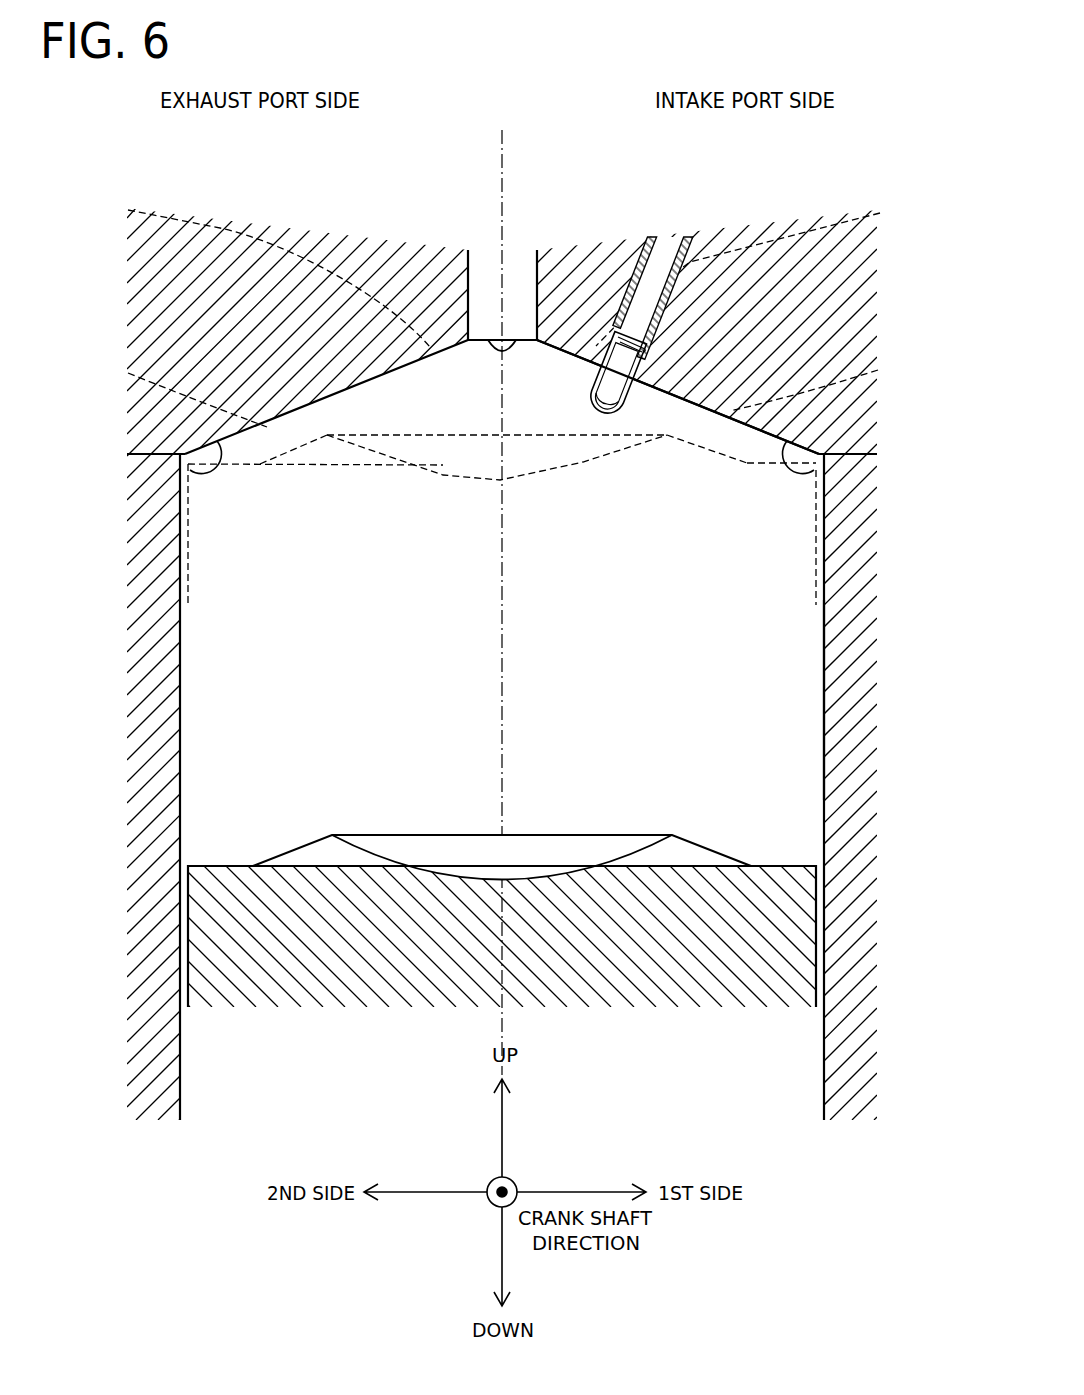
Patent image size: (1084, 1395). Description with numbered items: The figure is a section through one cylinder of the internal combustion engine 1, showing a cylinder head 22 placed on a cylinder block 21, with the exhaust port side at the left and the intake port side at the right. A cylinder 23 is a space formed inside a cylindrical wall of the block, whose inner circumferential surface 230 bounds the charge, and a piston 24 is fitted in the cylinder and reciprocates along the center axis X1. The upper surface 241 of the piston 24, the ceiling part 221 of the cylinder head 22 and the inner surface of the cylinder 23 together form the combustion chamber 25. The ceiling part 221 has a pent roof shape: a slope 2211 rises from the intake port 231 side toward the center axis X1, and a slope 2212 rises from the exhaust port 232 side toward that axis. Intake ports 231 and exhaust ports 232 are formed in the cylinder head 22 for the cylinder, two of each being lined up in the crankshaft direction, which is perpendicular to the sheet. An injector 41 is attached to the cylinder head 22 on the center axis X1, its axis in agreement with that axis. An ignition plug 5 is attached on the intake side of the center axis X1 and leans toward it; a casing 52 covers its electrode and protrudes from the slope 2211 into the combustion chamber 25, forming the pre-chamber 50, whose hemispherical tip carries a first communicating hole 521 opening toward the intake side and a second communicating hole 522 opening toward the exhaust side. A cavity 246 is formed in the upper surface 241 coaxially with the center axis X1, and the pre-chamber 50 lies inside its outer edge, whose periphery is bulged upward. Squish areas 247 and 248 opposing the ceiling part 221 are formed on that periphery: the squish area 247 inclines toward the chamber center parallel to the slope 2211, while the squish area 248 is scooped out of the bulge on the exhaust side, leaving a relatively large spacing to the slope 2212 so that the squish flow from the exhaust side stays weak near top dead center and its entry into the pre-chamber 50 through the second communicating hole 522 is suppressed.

The internal combustion engine 1 is at (897, 180).
The center axis X1 is at (504, 142).
The cylinder block 21 is at (165, 716).
The cylinder head 22 is at (158, 408).
The cylinder 23 is at (823, 686).
The piston 24 is at (818, 559).
The combustion chamber 25 is at (430, 633).
The injector 41 is at (466, 282).
The ignition plug 5 is at (604, 370).
The pre-chamber 50 is at (586, 416).
The casing 52 is at (578, 357).
The first communicating hole 521 is at (617, 415).
The second communicating hole 522 is at (582, 403).
The ceiling part 221 is at (430, 355).
The slope 2211 is at (814, 470).
The slope 2212 is at (190, 470).
The cylinder wall surface 230 is at (822, 720).
The intake port 231 is at (763, 240).
The exhaust port 232 is at (251, 242).
The upper surface 241 is at (210, 863).
The cavity 246 is at (455, 474).
The squish area 247 is at (738, 452).
The squish area 248 is at (333, 466).